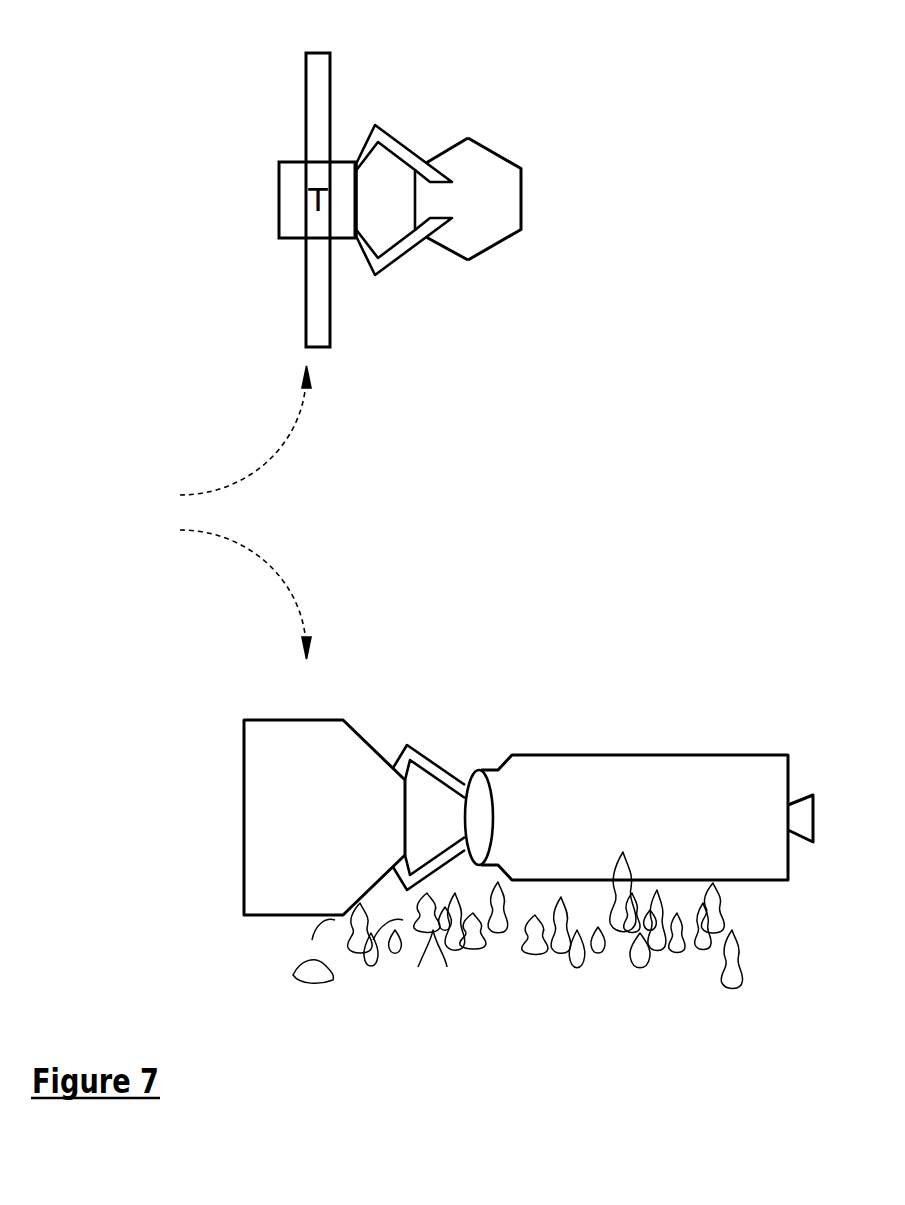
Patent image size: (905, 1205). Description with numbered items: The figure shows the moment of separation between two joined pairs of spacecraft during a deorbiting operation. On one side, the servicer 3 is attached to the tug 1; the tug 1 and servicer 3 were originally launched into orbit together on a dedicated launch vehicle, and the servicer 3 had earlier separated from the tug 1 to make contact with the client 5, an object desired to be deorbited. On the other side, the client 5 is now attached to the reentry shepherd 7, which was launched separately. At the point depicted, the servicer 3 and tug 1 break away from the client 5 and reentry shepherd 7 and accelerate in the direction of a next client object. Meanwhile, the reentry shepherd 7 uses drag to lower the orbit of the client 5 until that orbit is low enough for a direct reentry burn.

The tug 1 is at (330, 85).
The servicer 3 is at (492, 148).
The client 5 is at (653, 755).
The reentry shepherd 7 is at (297, 718).